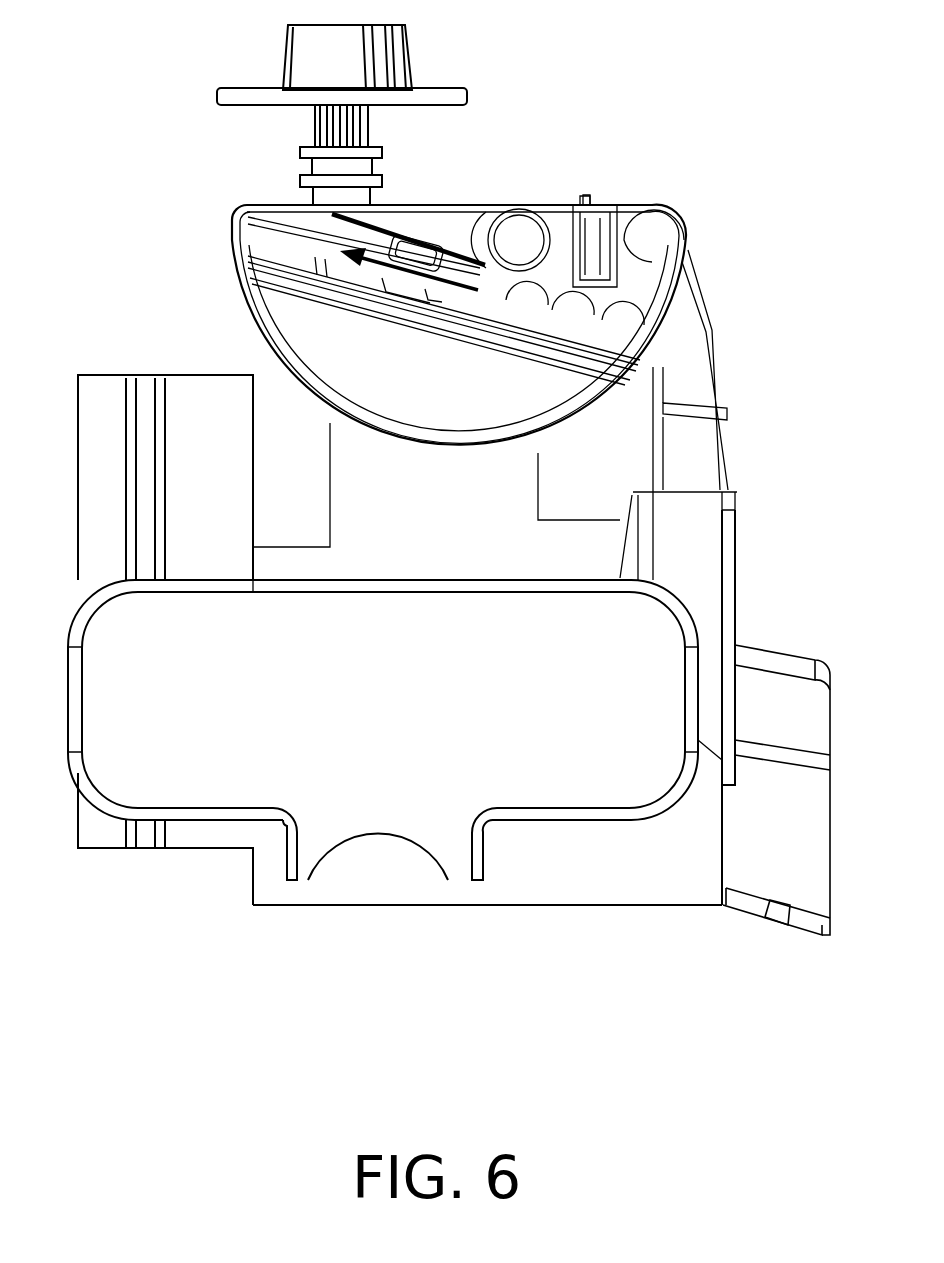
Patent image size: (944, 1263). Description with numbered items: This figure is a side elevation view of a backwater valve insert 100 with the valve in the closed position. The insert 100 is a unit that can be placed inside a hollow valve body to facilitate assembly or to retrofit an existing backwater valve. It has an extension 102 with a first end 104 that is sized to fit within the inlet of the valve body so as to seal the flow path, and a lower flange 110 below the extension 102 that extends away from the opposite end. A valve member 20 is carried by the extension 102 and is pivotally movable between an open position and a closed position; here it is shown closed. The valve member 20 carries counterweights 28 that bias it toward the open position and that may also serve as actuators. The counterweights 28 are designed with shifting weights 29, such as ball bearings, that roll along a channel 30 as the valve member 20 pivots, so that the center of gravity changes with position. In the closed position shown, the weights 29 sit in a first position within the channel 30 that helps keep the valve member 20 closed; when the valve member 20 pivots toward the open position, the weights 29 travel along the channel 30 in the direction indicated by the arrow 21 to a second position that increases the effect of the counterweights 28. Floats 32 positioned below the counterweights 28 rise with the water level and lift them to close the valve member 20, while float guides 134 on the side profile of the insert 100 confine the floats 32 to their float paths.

The backwater valve insert 100 is at (166, 198).
The counterweights 28 is at (552, 198).
The valve member 20 is at (670, 465).
The arrow 21 is at (377, 240).
The channel 30 is at (450, 262).
The shifting weight 29 is at (527, 300).
The first end 104 is at (84, 828).
The extension 102 is at (470, 545).
The floats 32 is at (517, 777).
The float guides 134 is at (723, 800).
The lower flange 110 is at (800, 920).